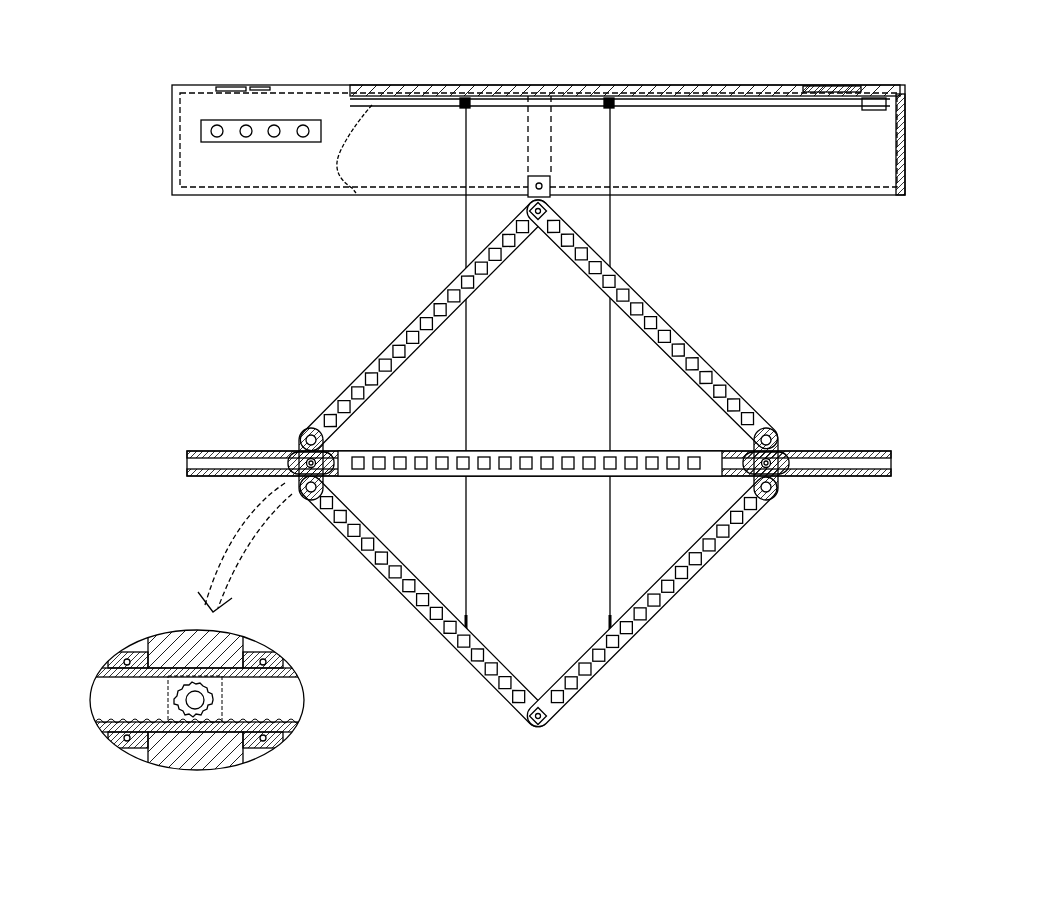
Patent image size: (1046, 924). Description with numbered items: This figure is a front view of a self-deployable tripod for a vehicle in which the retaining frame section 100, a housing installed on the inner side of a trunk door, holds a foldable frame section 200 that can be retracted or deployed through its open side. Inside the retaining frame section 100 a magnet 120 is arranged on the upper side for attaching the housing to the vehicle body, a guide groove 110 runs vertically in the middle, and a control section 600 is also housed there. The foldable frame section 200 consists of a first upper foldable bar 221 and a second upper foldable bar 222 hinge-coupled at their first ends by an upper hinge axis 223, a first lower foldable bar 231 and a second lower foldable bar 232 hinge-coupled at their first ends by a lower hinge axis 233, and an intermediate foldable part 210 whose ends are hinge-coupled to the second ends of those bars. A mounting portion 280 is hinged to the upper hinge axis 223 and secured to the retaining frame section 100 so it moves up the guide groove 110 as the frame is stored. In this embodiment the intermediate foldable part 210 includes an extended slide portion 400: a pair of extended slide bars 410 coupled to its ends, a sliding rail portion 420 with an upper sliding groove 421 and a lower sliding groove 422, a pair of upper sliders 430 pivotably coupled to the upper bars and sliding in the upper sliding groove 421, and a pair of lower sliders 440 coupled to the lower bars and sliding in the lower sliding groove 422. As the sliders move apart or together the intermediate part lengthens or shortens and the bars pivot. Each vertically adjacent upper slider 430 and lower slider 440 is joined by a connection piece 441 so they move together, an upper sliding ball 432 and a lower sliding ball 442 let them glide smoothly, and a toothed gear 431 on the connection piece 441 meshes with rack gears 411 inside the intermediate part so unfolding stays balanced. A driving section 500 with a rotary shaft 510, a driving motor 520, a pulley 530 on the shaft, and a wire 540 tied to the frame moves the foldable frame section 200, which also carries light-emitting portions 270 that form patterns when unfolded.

The retaining frame section 100 is at (148, 116).
The guide groove 110 is at (560, 96).
The magnet 120 is at (236, 86).
The foldable frame section 200 is at (466, 530).
The intermediate foldable part 210 is at (507, 478).
The first upper foldable bar 221 is at (412, 320).
The second upper foldable bar 222 is at (675, 315).
The upper hinge axis 223 is at (530, 211).
The first lower foldable bar 231 is at (395, 605).
The second lower foldable bar 232 is at (685, 592).
The lower hinge axis 233 is at (550, 722).
The light-emitting portions 270 is at (702, 563).
The mounting portion 280 is at (552, 196).
The extended slide portion 400 is at (417, 459).
The extended slide bars 410 is at (187, 472).
The rack gears 411 is at (100, 720).
The sliding rail portion 420 is at (187, 455).
The upper sliding groove 421 is at (205, 452).
The lower sliding groove 422 is at (205, 477).
The upper sliders 430 is at (300, 432).
The toothed gear 431 is at (222, 702).
The upper sliding ball 432 is at (285, 662).
The lower sliders 440 is at (300, 498).
The connection piece 441 is at (222, 688).
The lower sliding ball 442 is at (275, 745).
The driving section 500 is at (895, 133).
The rotary shaft 510 is at (742, 106).
The driving motor 520 is at (860, 108).
The pulley 530 is at (612, 106).
The wire 540 is at (612, 375).
The control section 600 is at (200, 160).